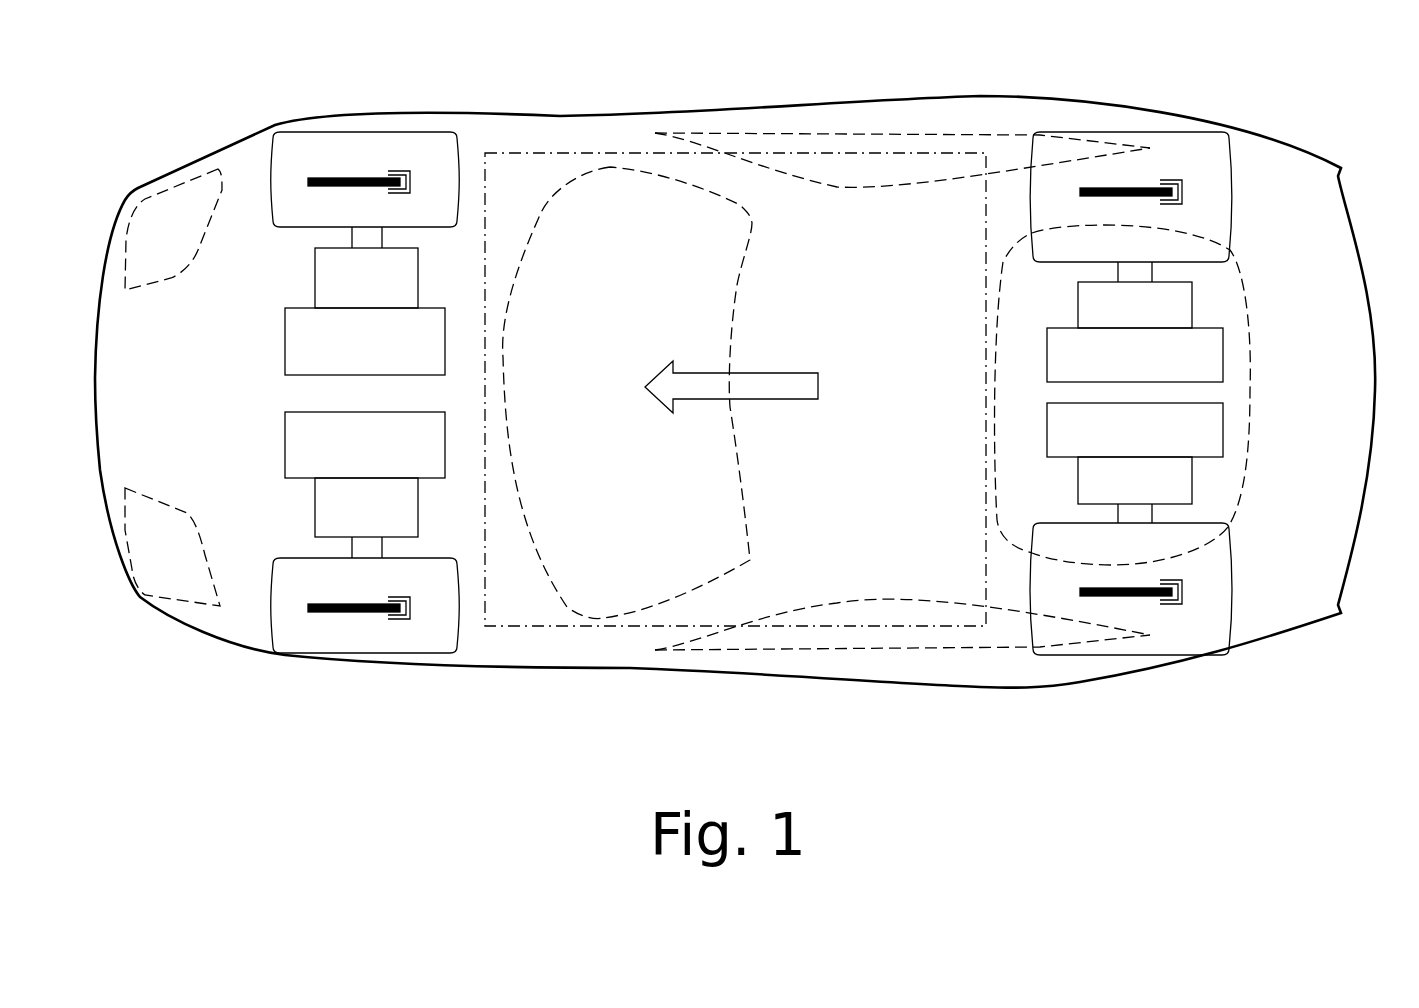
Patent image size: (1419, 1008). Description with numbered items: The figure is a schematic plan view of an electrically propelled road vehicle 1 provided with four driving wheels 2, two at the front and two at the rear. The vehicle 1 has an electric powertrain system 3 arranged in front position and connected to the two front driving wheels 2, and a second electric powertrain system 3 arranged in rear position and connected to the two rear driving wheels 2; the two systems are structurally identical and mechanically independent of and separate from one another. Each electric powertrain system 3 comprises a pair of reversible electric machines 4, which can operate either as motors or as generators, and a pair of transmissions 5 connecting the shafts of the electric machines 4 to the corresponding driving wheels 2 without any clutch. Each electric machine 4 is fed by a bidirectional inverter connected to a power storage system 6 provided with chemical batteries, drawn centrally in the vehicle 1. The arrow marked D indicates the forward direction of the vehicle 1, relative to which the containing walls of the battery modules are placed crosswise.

The electrically propelled vehicle 1 is at (755, 483).
The driving wheels 2 is at (372, 147).
The electric powertrain system 3 is at (233, 372).
The reversible electric machine 4 is at (754, 380).
The transmission 5 is at (769, 392).
The power storage system 6 is at (536, 627).
The forward direction D is at (772, 382).